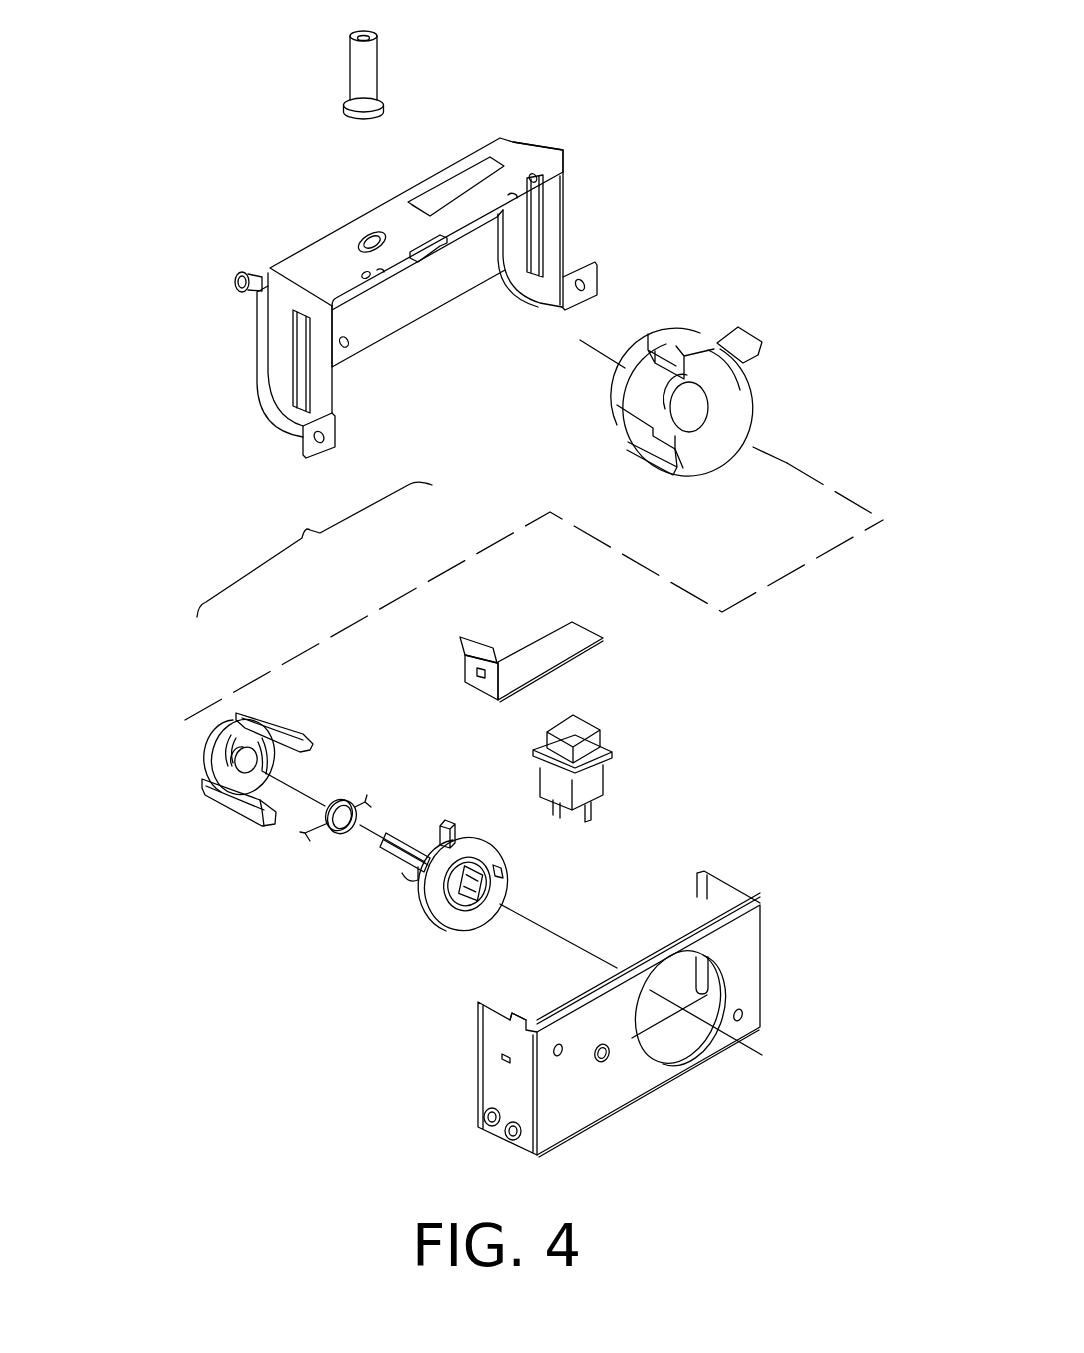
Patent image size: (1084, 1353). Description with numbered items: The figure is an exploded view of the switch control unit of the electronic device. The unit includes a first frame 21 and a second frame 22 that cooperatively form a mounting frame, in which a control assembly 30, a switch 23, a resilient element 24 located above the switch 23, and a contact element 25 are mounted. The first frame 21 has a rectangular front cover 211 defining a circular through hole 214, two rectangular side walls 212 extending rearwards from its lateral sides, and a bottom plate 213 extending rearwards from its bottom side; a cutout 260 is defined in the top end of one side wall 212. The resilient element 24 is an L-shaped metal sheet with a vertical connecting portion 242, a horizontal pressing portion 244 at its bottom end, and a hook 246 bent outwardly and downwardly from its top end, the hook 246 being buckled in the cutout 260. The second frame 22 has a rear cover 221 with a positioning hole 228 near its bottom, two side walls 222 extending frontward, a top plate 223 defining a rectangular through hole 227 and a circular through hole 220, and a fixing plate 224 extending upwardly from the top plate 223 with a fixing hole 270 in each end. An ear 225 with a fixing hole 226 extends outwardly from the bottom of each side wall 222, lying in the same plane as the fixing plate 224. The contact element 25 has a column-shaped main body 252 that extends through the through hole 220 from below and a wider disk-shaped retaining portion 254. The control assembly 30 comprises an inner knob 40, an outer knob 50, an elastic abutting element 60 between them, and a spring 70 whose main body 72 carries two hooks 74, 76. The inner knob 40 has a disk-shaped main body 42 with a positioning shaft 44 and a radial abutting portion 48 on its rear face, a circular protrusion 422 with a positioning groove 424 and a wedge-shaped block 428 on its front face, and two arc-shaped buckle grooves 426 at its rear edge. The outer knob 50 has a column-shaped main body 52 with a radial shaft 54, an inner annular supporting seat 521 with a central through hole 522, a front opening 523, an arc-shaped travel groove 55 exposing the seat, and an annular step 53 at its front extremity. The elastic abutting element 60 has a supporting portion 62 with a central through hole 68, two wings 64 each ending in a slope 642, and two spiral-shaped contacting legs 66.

The first frame 21 is at (618, 1132).
The front cover 211 is at (740, 960).
The side walls 212 is at (723, 893).
The bottom plate 213 is at (665, 1040).
The circular through hole 214 is at (678, 980).
The second frame 22 is at (256, 184).
The circular through hole 220 is at (374, 236).
The rear cover 221 is at (415, 298).
The side walls 222 is at (552, 208).
The top plate 223 is at (330, 258).
The fixing plate 224 is at (560, 158).
The ear 225 is at (588, 263).
The fixing hole 226 is at (583, 286).
The rectangular through hole 227 is at (470, 180).
The positioning hole 228 is at (347, 347).
The switch 23 is at (580, 720).
The resilient element 24 is at (612, 652).
The connecting portion 242 is at (490, 686).
The pressing portion 244 is at (545, 650).
The hook 246 is at (460, 647).
The contact element 25 is at (250, 38).
The main body 252 is at (355, 60).
The retaining portion 254 is at (352, 108).
The cutout 260 is at (505, 1028).
The fixing hole 270 is at (533, 172).
The control assembly 30 is at (314, 549).
The inner knob 40 is at (446, 805).
The main body 42 is at (420, 897).
The circular protrusion 422 is at (460, 913).
The positioning groove 424 is at (477, 907).
The buckle grooves 426 is at (480, 845).
The wedge-shaped block 428 is at (502, 876).
The positioning shaft 44 is at (407, 856).
The abutting portion 48 is at (452, 820).
The outer knob 50 is at (595, 448).
The main body 52 is at (690, 340).
The supporting seat 521 is at (640, 410).
The through hole 522 is at (753, 420).
The opening 523 is at (735, 395).
The annular step 53 is at (680, 468).
The radial shaft 54 is at (745, 335).
The travel groove 55 is at (668, 440).
The elastic abutting element 60 is at (265, 698).
The supporting portion 62 is at (230, 777).
The wings 64 is at (230, 795).
The slope 642 is at (243, 818).
The contacting legs 66 is at (225, 712).
The circular through hole 68 is at (240, 760).
The spring 70 is at (357, 782).
The main body 72 is at (332, 835).
The hook 74 is at (367, 803).
The hook 76 is at (298, 830).